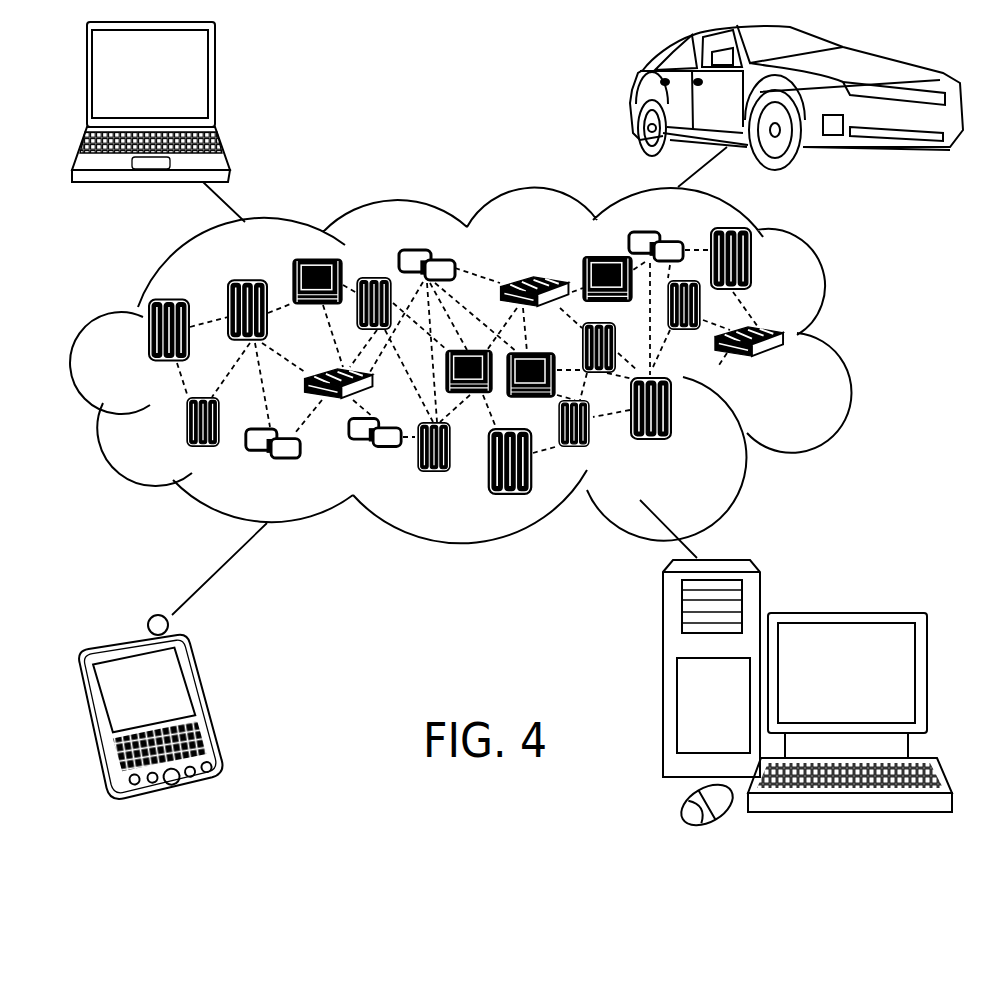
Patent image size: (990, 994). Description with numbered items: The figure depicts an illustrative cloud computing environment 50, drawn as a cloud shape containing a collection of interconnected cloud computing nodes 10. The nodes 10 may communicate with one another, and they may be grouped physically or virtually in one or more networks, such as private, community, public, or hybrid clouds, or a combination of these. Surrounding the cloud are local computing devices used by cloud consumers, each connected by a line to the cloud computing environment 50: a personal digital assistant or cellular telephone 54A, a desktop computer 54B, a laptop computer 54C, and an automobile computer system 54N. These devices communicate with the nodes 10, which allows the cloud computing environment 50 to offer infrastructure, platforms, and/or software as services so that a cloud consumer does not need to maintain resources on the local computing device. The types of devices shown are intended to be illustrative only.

The cloud computing node 10 is at (796, 372).
The cloud computing environment 50 is at (845, 347).
The personal digital assistant or cellular telephone 54A is at (207, 697).
The desktop computer 54B is at (843, 612).
The laptop computer 54C is at (217, 82).
The automobile computer system 54N is at (632, 100).